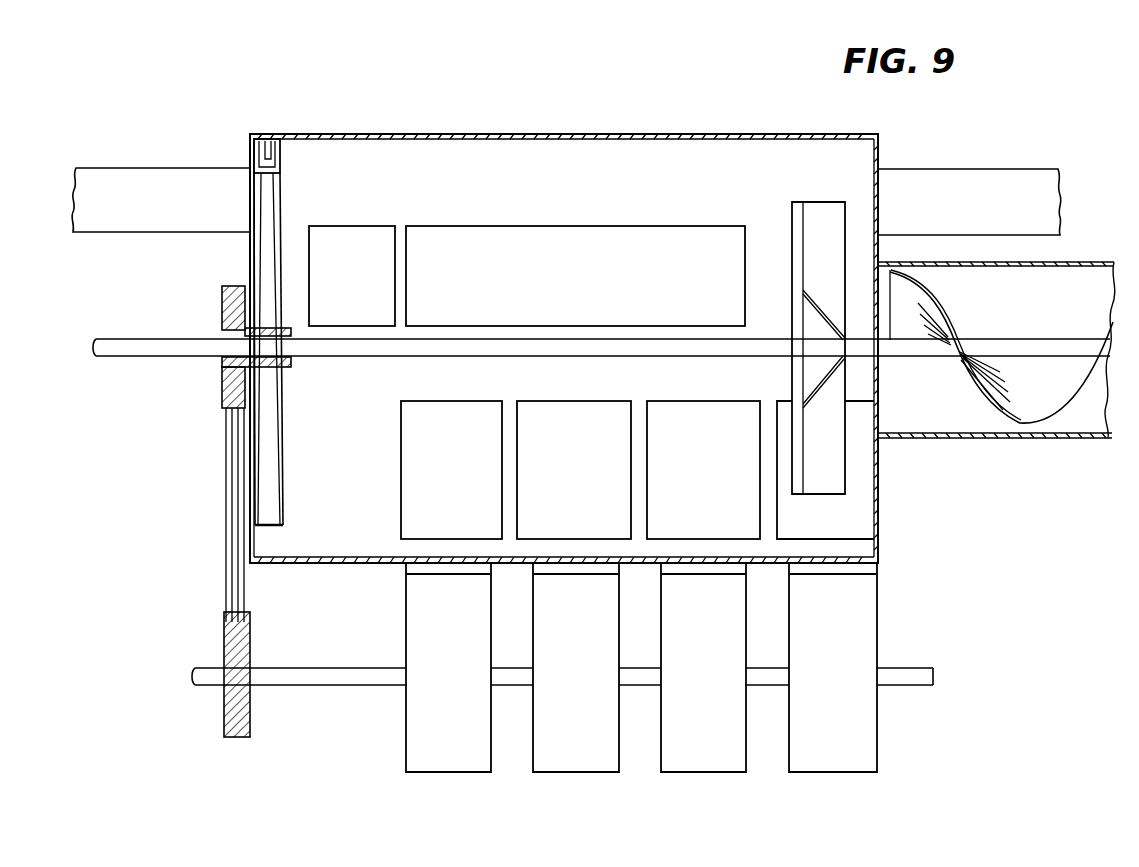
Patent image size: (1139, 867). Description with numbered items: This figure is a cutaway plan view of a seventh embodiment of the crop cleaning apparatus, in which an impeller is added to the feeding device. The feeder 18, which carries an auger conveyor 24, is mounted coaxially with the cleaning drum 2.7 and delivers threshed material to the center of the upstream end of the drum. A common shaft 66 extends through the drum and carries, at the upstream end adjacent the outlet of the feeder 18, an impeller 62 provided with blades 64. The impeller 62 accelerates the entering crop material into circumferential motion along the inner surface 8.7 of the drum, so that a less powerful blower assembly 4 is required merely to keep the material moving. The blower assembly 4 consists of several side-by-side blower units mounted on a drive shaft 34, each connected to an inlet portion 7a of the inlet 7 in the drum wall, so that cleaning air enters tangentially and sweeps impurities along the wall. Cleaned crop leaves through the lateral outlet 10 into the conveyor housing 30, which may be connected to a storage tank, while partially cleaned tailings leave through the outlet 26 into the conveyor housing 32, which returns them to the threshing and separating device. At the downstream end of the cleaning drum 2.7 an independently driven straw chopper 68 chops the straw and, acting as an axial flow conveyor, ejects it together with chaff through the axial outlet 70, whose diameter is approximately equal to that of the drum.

The cleaning drum 2.7 is at (547, 132).
The straw chopper 68 is at (284, 130).
The axial outlet 70 is at (247, 252).
The conveyor housing 32 is at (180, 208).
The conveyor housing 30 is at (965, 208).
The feeder 18 is at (987, 446).
The auger conveyor 24 is at (970, 386).
The common shaft 66 is at (172, 358).
The outlet 26 is at (354, 248).
The lateral outlet 10 is at (528, 252).
The impeller 62 is at (800, 200).
The blades 64 is at (832, 202).
The inlet 7 is at (605, 450).
The inlet portion 7a is at (452, 462).
The inner surface 8.7 is at (373, 556).
The drive shaft 34 is at (355, 667).
The blower assembly 4 is at (894, 728).